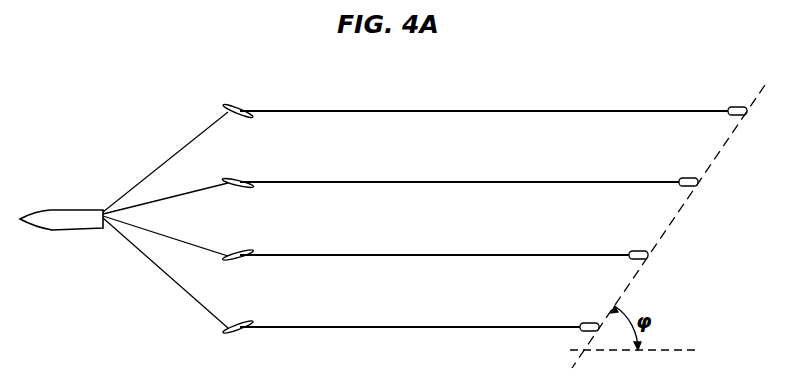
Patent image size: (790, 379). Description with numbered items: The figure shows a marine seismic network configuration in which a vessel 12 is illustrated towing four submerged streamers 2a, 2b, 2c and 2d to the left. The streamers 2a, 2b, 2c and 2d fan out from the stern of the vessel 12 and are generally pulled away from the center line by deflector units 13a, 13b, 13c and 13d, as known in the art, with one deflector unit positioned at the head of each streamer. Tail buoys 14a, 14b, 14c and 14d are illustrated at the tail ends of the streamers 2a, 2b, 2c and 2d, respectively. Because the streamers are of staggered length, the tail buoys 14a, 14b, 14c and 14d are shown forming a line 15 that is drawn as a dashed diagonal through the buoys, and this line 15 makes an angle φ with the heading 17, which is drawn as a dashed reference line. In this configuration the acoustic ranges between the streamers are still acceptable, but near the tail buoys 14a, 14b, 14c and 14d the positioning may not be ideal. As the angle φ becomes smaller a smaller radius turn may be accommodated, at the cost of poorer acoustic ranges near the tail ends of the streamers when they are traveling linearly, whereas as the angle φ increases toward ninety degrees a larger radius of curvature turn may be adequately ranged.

The vessel 12 is at (53, 213).
The deflector unit 13a is at (236, 105).
The deflector unit 13b is at (236, 177).
The deflector unit 13c is at (236, 262).
The deflector unit 13d is at (236, 334).
The streamer 2a is at (422, 110).
The streamer 2b is at (422, 181).
The streamer 2c is at (422, 254).
The streamer 2d is at (422, 328).
The tail buoy 14a is at (735, 105).
The tail buoy 14b is at (685, 176).
The tail buoy 14c is at (637, 249).
The tail buoy 14d is at (588, 321).
The line 15 is at (721, 153).
The heading 17 is at (672, 349).